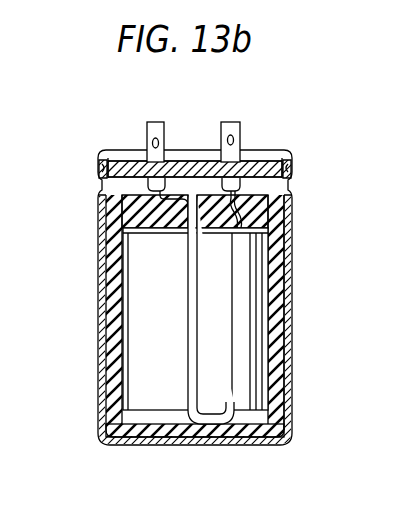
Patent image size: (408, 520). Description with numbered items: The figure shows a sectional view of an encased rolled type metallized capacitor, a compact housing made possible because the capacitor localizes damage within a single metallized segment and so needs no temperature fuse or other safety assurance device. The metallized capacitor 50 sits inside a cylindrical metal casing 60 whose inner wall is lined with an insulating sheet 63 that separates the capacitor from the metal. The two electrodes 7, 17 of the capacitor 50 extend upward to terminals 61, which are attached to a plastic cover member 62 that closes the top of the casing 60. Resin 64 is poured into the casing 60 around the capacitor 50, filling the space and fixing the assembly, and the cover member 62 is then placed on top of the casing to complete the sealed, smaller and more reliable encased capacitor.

The electrode 7 is at (238, 196).
The electrode 17 is at (191, 378).
The metallized capacitor 50 is at (263, 327).
The cylindrical metal casing 60 is at (294, 377).
The terminals 61 is at (224, 128).
The plastic cover member 62 is at (280, 152).
The insulating sheet 63 is at (290, 279).
The resin 64 is at (103, 258).